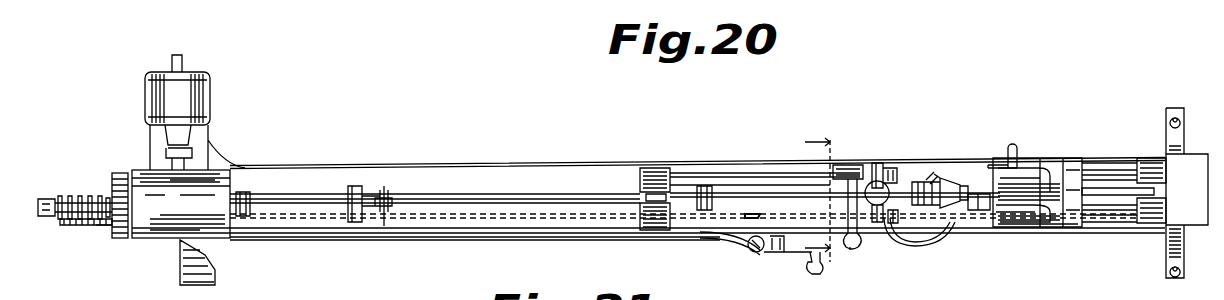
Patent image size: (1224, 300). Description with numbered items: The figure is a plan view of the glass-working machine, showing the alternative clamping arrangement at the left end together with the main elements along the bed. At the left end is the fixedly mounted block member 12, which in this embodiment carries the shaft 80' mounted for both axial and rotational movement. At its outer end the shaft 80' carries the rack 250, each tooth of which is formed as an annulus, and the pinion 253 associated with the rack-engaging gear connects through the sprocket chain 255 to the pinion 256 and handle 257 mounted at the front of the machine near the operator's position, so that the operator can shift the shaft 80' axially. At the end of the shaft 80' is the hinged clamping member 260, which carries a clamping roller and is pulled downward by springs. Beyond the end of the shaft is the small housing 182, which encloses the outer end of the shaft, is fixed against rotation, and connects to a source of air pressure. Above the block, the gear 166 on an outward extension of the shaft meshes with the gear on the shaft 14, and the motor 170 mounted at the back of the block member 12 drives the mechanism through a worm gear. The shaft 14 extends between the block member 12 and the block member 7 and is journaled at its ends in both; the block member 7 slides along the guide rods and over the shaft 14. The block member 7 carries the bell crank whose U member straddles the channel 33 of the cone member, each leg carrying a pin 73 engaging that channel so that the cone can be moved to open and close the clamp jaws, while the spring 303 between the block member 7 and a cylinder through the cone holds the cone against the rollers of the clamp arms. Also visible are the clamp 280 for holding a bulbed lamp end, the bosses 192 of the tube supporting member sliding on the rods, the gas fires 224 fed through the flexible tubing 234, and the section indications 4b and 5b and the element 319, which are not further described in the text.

The block member 12 is at (181, 204).
The motor 170 is at (210, 94).
The gear 166 is at (120, 174).
The rack 250 is at (80, 196).
The small housing 182 is at (46, 199).
The pinion 253 is at (72, 226).
The sprocket chain 255 is at (100, 226).
The shaft 80' is at (279, 176).
The hinged clamping member 260 is at (374, 190).
The section line 4b is at (803, 193).
The section line 5b is at (810, 243).
The pinion 256 is at (748, 250).
The handle 257 is at (804, 262).
The bosses 192 is at (851, 165).
The gas fires 224 is at (882, 168).
The clamp 280 is at (926, 208).
The flexible tubing 234 is at (920, 247).
The pin 73 is at (946, 182).
The spring 303 is at (989, 212).
The channel 33 is at (995, 180).
The block member 7 is at (1038, 184).
The shaft 14 is at (1108, 188).
The handle 319 is at (851, 252).